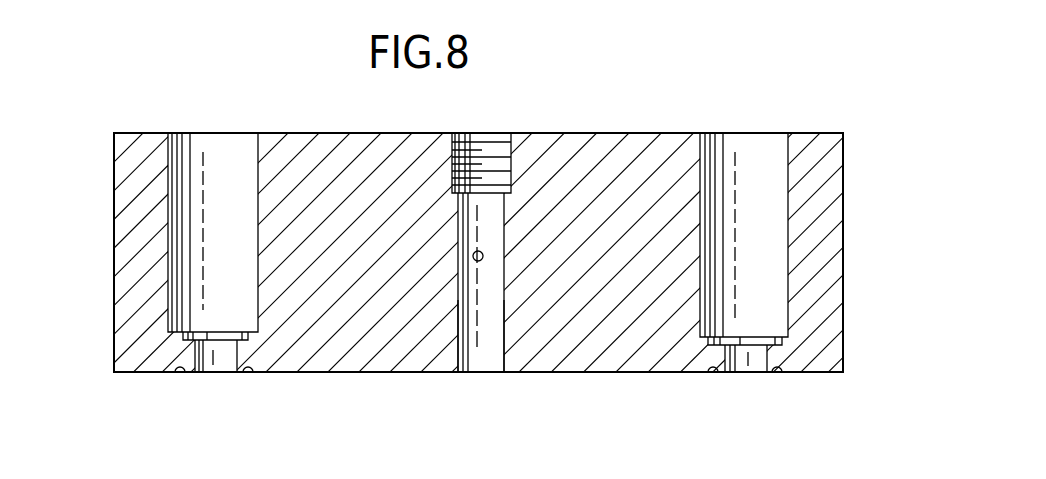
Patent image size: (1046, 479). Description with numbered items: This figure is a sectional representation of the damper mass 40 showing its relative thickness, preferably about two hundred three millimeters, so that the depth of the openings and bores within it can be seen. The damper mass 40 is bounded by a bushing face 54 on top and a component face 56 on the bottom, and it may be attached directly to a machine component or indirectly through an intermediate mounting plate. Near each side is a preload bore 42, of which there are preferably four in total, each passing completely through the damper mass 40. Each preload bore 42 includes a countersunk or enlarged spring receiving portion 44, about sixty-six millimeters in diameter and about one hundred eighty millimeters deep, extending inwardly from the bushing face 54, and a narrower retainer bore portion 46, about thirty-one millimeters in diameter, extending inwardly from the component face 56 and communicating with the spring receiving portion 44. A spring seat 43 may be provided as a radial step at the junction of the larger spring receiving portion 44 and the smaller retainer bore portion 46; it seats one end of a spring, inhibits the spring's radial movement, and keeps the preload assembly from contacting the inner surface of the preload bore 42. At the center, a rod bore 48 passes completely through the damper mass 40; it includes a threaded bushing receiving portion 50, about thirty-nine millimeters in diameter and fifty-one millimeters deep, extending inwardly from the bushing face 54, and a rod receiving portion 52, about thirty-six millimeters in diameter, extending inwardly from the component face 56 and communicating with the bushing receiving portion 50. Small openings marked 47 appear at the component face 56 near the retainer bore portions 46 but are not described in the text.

The damper mass 40 is at (582, 132).
The preload bore 42 is at (766, 146).
The spring seat 43 is at (242, 337).
The spring receiving portion 44 is at (228, 146).
The retainer bore portion 46 is at (224, 366).
The port 47 is at (180, 370).
The rod bore 48 is at (458, 270).
The threaded bushing receiving portion 50 is at (497, 142).
The rod receiving portion 52 is at (487, 360).
The bushing face 54 is at (368, 136).
The component face 56 is at (407, 372).